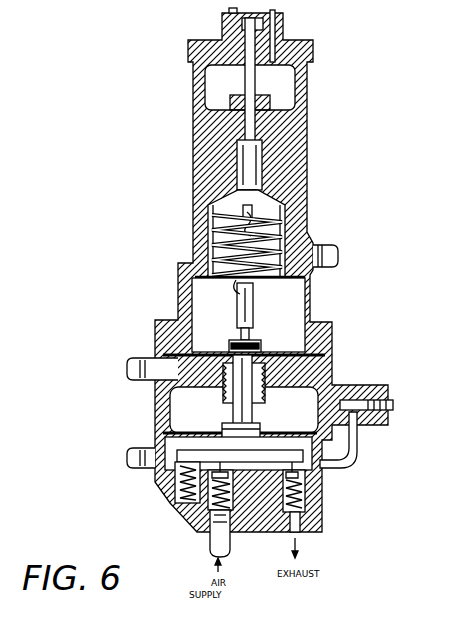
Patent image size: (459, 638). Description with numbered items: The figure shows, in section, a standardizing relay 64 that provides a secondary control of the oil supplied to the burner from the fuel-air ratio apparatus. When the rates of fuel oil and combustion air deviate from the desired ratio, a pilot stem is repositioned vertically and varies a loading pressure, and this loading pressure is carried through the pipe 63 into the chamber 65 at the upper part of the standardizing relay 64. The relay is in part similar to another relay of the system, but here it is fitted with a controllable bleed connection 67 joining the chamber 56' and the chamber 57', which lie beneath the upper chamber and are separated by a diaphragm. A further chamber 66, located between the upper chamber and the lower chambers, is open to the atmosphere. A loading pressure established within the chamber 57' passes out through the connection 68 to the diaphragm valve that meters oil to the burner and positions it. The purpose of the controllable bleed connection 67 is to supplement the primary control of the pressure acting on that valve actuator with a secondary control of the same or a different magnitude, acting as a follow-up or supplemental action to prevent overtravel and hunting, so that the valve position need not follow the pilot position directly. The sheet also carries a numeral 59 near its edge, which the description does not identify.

The standardizing relay 64 is at (190, 138).
The pipe 63 is at (325, 244).
The chamber 65 is at (253, 316).
The chamber 66 is at (244, 363).
The chamber 56' is at (244, 394).
The controllable bleed connection 67 is at (359, 456).
The chamber 57' is at (240, 437).
The connection 68 is at (140, 446).
The reference numeral 59 is at (422, 6).